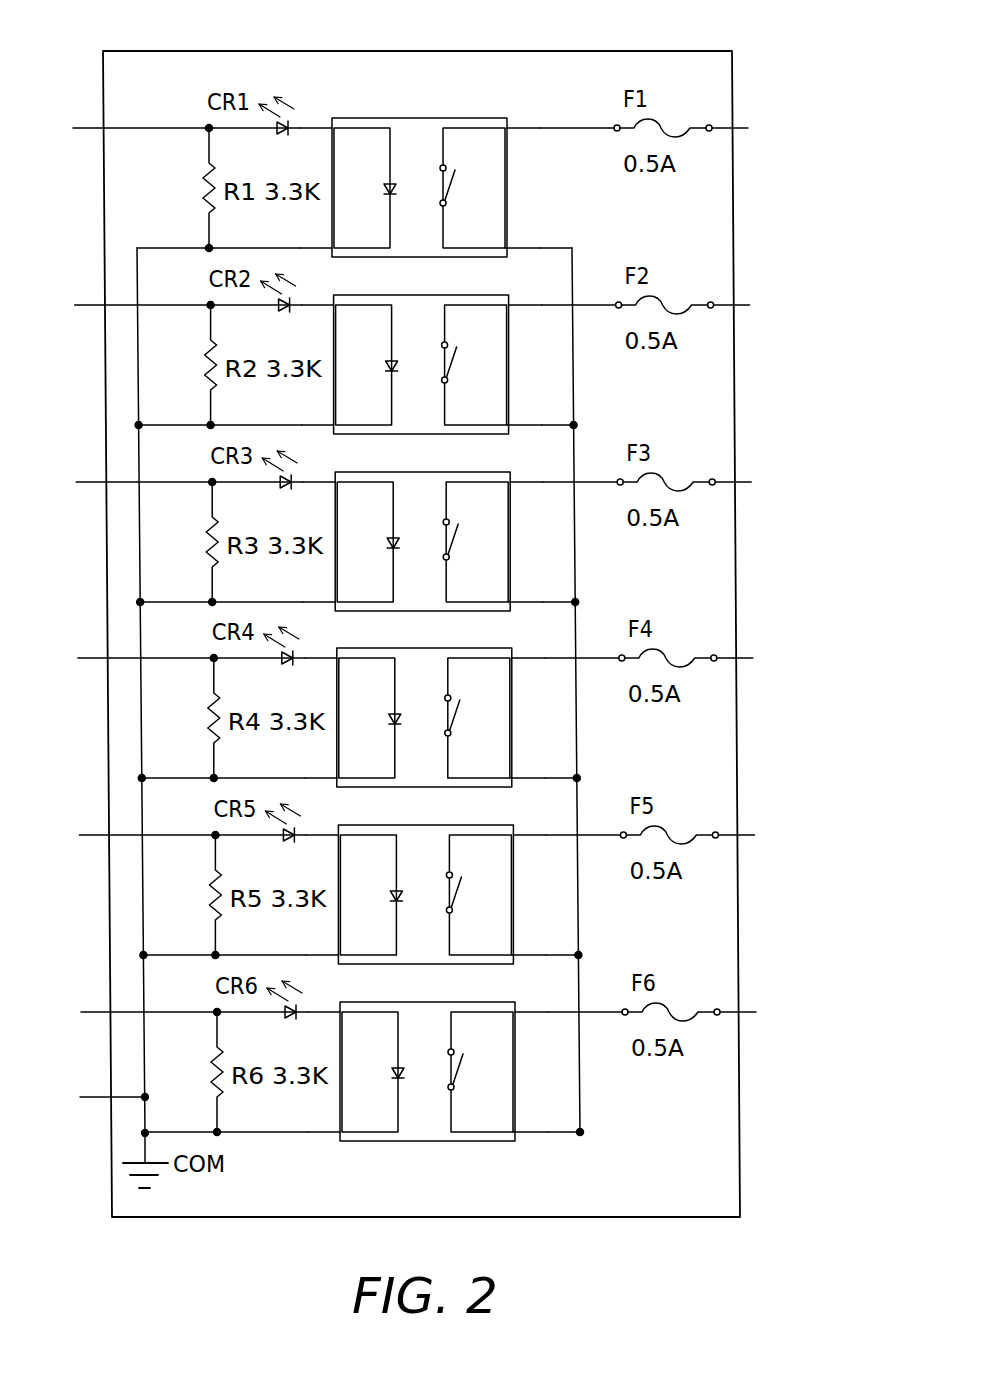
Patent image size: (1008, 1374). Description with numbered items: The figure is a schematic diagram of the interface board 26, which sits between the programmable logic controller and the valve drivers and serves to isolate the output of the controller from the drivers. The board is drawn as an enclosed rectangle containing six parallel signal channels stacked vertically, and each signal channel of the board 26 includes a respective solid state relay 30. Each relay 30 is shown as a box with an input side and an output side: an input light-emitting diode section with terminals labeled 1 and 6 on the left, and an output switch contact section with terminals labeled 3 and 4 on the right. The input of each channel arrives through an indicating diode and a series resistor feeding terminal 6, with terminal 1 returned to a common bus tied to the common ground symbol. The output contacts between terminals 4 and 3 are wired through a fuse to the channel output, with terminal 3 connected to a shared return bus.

The interface board 26 is at (562, 48).
The solid state relay 30 is at (507, 178).
The relay input terminal 1 is at (320, 676).
The relay output terminal 3 is at (526, 676).
The relay output terminal 4 is at (527, 553).
The relay input terminal 6 is at (320, 553).